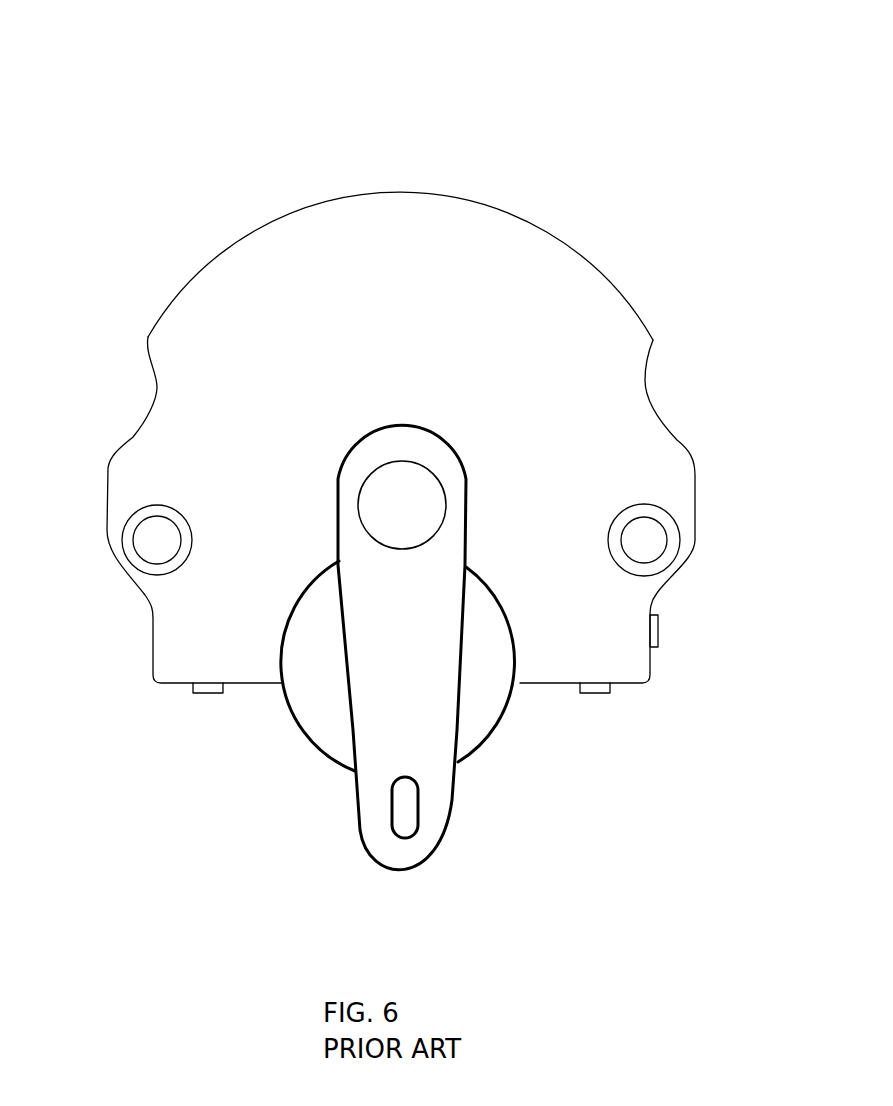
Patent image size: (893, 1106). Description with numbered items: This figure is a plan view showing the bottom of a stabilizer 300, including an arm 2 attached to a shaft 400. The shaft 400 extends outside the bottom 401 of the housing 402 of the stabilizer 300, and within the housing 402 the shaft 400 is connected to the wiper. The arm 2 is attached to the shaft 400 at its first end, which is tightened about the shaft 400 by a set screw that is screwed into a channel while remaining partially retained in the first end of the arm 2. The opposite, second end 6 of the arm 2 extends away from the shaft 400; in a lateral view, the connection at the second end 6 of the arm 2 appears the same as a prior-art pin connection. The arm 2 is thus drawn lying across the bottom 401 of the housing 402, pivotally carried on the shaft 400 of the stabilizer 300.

The stabilizer 300 is at (378, 86).
The bottom 401 is at (320, 273).
The housing 402 is at (573, 250).
The arm 2 is at (373, 452).
The shaft 400 is at (420, 462).
The second end 6 is at (422, 843).